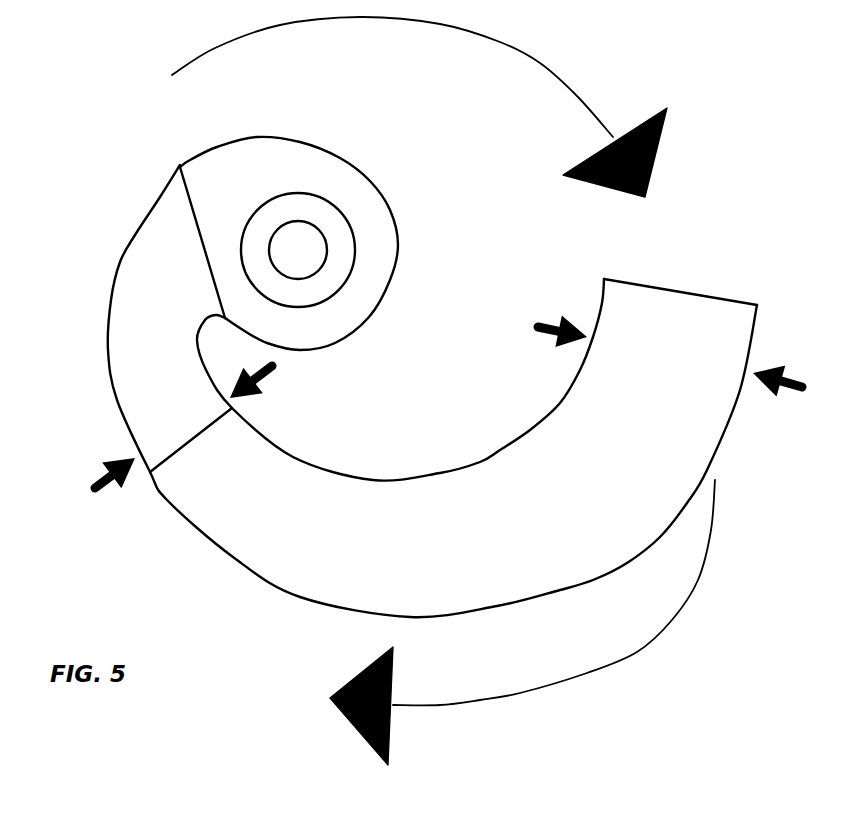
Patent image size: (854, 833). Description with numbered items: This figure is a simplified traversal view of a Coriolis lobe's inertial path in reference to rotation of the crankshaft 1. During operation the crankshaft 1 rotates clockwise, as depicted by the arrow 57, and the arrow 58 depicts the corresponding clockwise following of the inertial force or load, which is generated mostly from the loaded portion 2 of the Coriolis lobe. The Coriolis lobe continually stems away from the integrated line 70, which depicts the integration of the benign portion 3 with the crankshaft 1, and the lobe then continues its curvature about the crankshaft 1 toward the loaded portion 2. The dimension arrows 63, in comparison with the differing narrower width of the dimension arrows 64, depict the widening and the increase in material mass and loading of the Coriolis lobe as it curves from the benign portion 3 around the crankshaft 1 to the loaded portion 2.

The crankshaft 1 is at (344, 323).
The loaded portion 2 is at (660, 310).
The benign portion 3 is at (133, 357).
The arrow 57 is at (540, 62).
The arrow 58 is at (587, 673).
The dimension arrows 63 is at (545, 330).
The dimension arrows 64 is at (263, 367).
The integrated line 70 is at (182, 197).